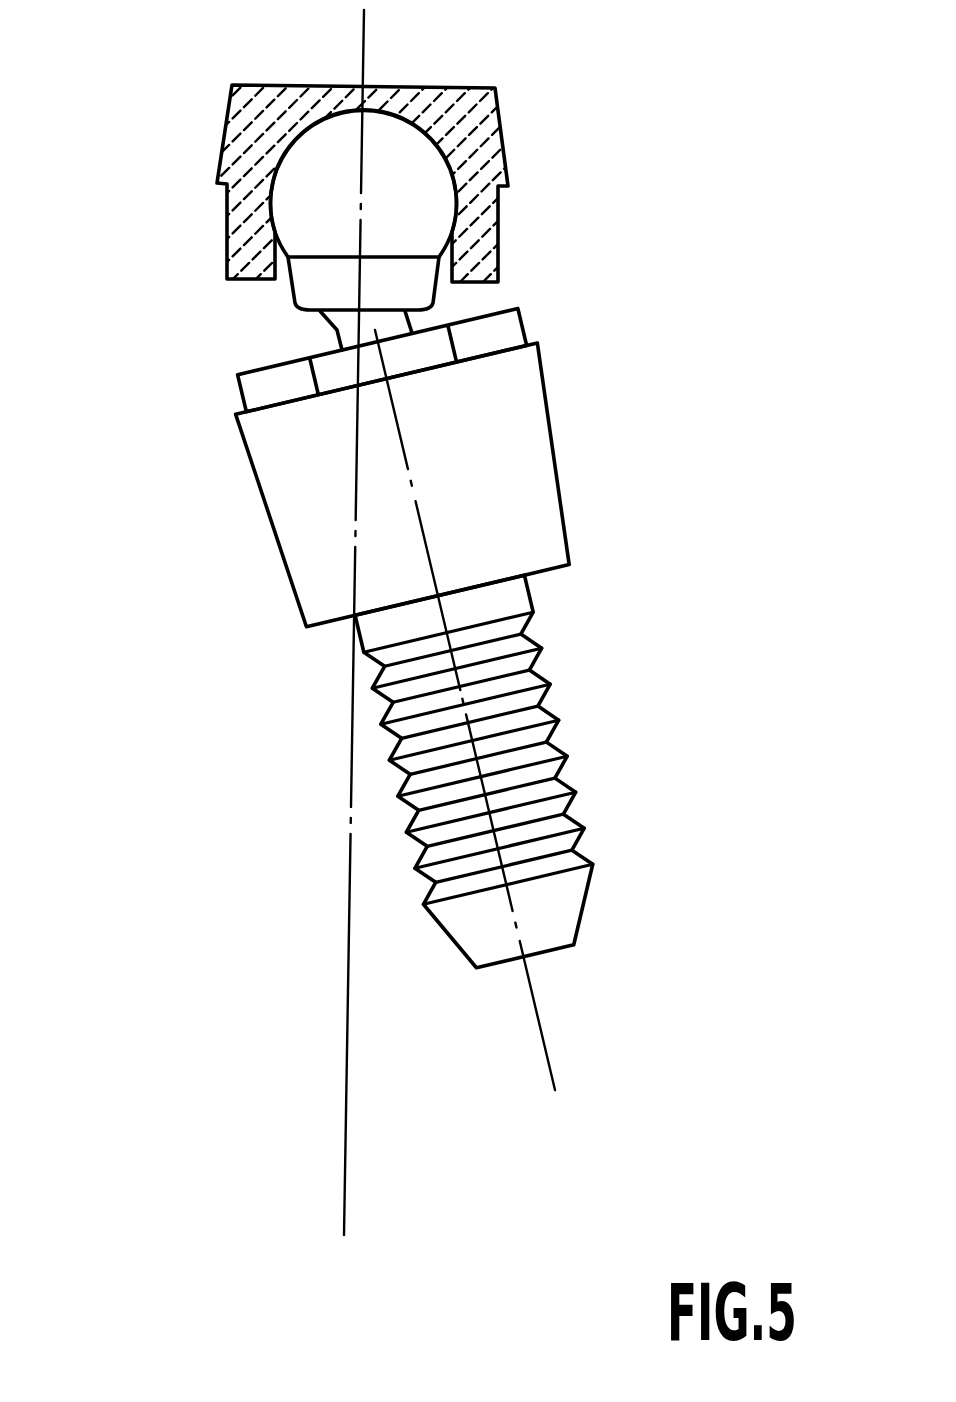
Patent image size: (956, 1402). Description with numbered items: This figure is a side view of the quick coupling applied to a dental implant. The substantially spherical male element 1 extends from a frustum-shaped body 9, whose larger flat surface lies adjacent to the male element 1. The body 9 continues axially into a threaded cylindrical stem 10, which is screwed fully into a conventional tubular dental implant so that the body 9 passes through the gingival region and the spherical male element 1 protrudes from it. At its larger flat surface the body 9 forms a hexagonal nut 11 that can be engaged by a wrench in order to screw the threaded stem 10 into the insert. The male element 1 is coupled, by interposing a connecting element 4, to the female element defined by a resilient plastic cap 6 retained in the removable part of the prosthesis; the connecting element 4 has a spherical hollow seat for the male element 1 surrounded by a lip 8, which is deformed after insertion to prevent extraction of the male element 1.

The male element 1 is at (330, 318).
The connecting element 4 is at (413, 180).
The cap 6 is at (227, 135).
The lip 8 is at (318, 280).
The frustum-shaped body 9 is at (272, 510).
The threaded cylindrical stem 10 is at (396, 633).
The hexagonal nut 11 is at (500, 333).